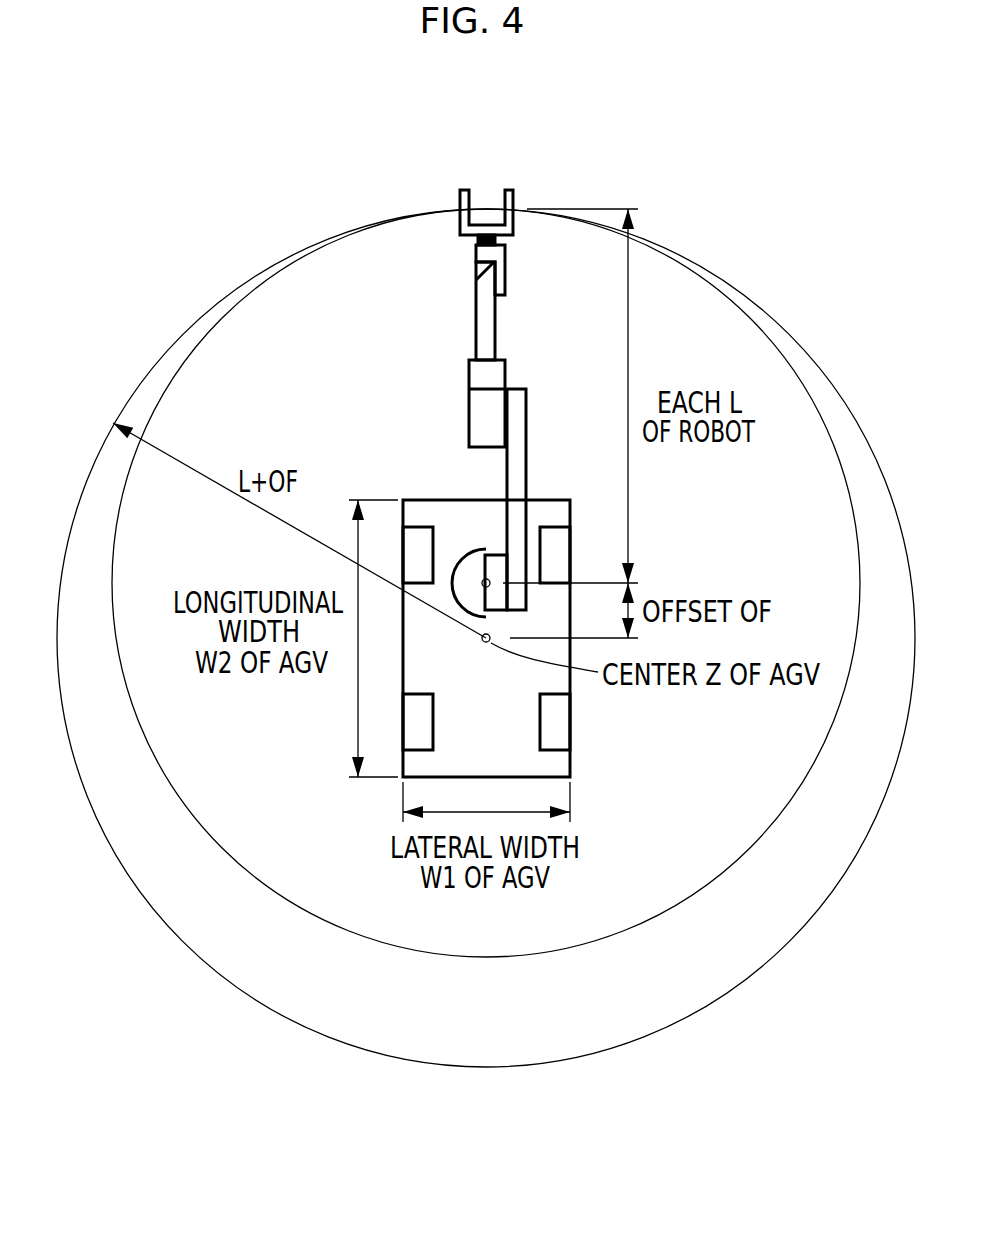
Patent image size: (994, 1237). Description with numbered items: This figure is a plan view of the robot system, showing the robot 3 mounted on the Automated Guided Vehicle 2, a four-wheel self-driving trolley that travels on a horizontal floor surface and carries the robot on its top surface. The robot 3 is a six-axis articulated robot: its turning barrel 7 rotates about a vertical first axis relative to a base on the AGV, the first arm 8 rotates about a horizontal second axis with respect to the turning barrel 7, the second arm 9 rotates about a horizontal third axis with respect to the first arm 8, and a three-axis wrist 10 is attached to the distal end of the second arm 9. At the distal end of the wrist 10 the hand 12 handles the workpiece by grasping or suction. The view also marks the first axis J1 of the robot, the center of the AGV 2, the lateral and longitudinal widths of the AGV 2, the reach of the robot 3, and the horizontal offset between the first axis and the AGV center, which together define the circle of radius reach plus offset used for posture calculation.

The Automated Guided Vehicle 2 is at (592, 733).
The robot 3 is at (558, 352).
The turning barrel 7 is at (478, 548).
The first arm 8 is at (527, 463).
The second arm 9 is at (469, 410).
The three-axis wrist 10 is at (458, 290).
The hand 12 is at (460, 205).
The first joint axis J1 is at (482, 578).